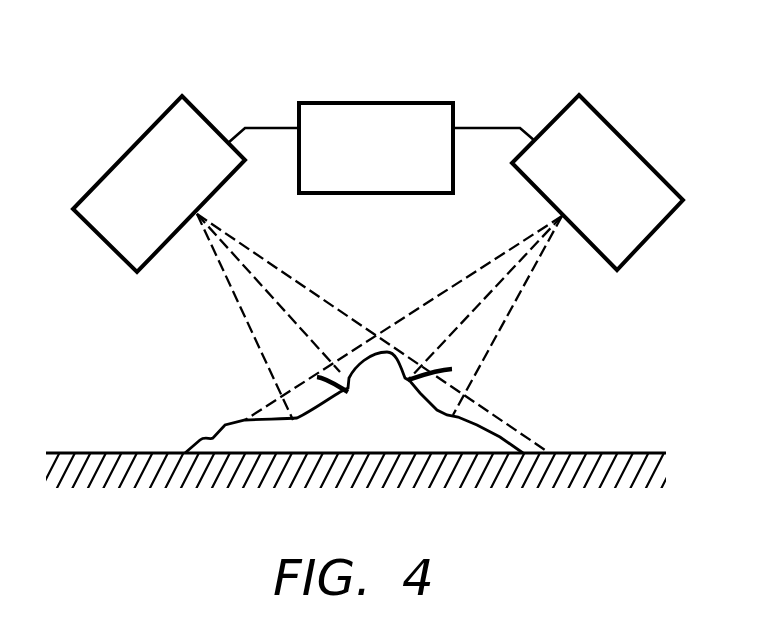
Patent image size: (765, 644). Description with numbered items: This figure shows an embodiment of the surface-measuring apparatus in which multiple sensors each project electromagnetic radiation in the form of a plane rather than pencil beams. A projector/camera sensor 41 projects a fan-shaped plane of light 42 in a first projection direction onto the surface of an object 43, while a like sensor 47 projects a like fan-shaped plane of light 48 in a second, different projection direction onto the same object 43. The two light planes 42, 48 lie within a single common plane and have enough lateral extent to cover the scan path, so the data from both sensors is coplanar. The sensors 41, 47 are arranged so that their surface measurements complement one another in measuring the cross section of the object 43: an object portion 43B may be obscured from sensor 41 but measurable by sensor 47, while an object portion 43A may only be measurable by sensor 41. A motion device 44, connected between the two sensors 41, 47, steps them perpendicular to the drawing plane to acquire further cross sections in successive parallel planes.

The projector/camera sensor 41 is at (125, 154).
The plane of light 42 is at (282, 272).
The object 43 is at (207, 437).
The object portion 43A is at (317, 377).
The object portion 43B is at (452, 369).
The motion device 44 is at (371, 103).
The sensor 47 is at (637, 151).
The plane of light 48 is at (513, 313).